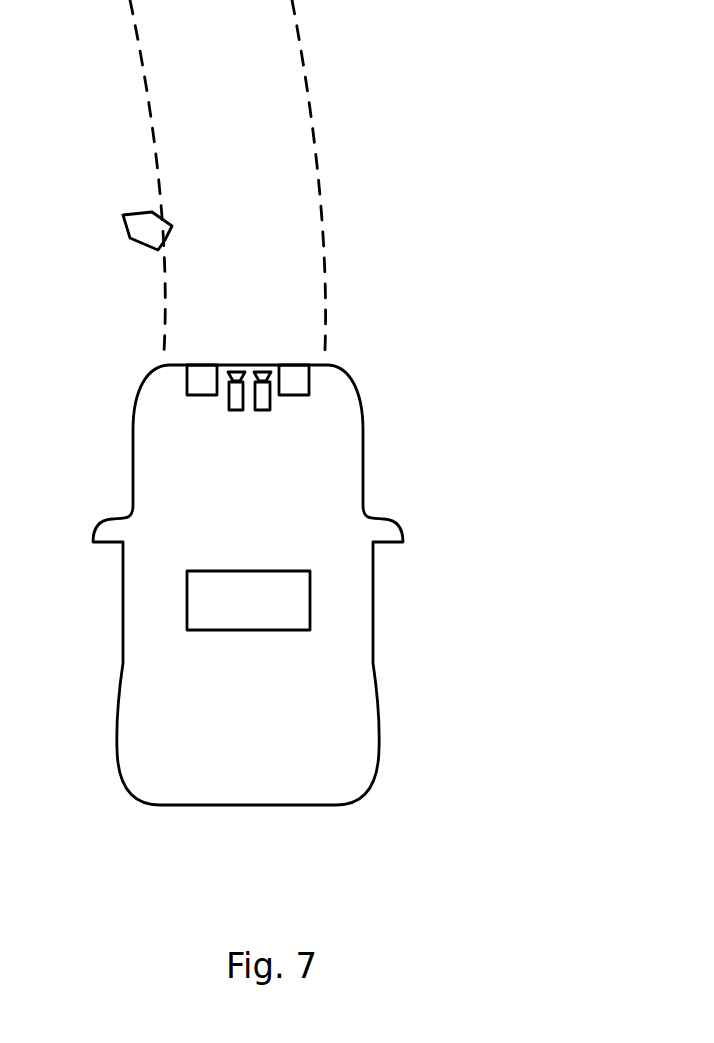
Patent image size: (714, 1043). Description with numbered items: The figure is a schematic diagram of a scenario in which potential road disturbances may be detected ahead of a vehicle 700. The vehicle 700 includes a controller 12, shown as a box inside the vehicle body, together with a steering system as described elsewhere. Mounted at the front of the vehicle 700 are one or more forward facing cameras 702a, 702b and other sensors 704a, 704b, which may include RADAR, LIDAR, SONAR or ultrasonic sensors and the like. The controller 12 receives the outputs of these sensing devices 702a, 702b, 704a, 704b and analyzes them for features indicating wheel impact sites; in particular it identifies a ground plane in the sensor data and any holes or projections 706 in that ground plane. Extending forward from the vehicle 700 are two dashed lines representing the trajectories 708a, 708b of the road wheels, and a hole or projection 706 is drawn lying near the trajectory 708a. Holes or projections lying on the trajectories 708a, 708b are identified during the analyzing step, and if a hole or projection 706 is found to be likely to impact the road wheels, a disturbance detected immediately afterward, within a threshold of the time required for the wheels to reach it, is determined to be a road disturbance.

The vehicle 700 is at (258, 800).
The controller 12 is at (259, 612).
The forward facing camera 702a is at (228, 405).
The forward facing camera 702b is at (267, 412).
The sensor 704a is at (205, 380).
The sensor 704b is at (305, 385).
The hole or projection 706 is at (143, 232).
The trajectory 708a is at (158, 183).
The trajectory 708b is at (323, 196).